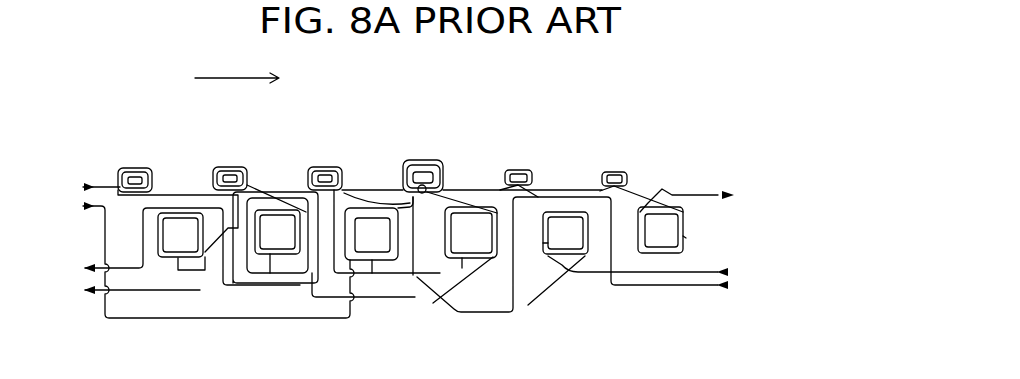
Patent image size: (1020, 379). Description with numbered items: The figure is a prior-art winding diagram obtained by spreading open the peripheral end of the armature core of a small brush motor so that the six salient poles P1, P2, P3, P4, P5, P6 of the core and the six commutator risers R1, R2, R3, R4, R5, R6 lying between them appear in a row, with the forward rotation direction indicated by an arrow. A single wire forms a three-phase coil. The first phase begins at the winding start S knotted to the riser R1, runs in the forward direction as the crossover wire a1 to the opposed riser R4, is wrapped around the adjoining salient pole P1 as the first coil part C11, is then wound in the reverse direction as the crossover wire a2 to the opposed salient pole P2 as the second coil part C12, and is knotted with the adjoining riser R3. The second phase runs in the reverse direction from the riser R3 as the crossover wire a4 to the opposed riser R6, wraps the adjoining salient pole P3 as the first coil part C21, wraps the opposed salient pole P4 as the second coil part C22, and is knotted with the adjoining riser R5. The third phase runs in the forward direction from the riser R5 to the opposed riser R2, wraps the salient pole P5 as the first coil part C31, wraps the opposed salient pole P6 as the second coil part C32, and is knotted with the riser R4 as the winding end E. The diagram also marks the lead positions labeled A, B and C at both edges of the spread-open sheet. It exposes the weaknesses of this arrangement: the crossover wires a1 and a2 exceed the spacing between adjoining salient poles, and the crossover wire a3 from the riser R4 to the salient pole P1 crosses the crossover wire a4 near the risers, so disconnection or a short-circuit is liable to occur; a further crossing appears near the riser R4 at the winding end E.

The riser R1 is at (135, 167).
The riser R2 is at (641, 177).
The riser R3 is at (519, 169).
The riser R4 is at (502, 177).
The riser R5 is at (374, 207).
The riser R6 is at (259, 177).
The salient pole P1 is at (465, 255).
The salient pole P2 is at (180, 235).
The salient pole P3 is at (275, 237).
The salient pole P4 is at (558, 258).
The salient pole P5 is at (660, 230).
The salient pole P6 is at (371, 234).
The crossover wire a1 is at (182, 195).
The crossover wire a2 is at (366, 300).
The crossover wire a3 is at (468, 192).
The crossover wire a4 is at (488, 190).
The first coil part C11 is at (463, 258).
The second coil part C12 is at (177, 258).
The first coil part C21 is at (270, 273).
The second coil part C22 is at (543, 243).
The first coil part C31 is at (684, 238).
The second coil part C32 is at (378, 262).
The winding start S is at (89, 187).
The terminal A is at (406, 254).
The terminal B is at (405, 246).
The terminal C is at (405, 251).
The winding end E is at (408, 162).